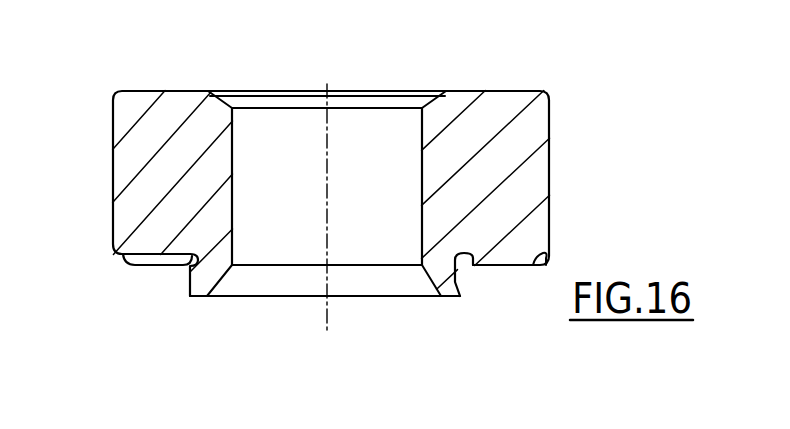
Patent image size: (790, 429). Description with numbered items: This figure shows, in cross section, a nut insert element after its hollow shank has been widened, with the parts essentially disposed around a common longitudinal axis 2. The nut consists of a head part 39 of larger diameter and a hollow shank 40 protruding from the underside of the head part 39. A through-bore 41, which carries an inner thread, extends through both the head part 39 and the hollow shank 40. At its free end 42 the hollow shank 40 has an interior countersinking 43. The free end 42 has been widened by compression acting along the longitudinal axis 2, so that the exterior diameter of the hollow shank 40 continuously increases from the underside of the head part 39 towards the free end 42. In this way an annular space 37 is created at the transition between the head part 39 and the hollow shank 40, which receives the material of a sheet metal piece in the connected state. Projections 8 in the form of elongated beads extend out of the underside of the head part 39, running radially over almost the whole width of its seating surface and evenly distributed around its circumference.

The longitudinal axis 2 is at (327, 82).
The projections 8 is at (143, 268).
The annular space 37 is at (192, 263).
The head part 39 is at (534, 172).
The hollow shank 40 is at (428, 298).
The through-bore 41 is at (272, 228).
The free end 42 is at (190, 312).
The interior countersinking 43 is at (382, 283).